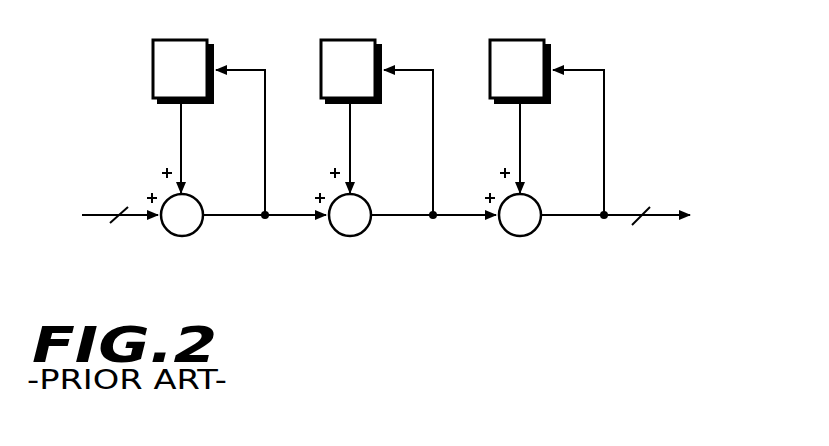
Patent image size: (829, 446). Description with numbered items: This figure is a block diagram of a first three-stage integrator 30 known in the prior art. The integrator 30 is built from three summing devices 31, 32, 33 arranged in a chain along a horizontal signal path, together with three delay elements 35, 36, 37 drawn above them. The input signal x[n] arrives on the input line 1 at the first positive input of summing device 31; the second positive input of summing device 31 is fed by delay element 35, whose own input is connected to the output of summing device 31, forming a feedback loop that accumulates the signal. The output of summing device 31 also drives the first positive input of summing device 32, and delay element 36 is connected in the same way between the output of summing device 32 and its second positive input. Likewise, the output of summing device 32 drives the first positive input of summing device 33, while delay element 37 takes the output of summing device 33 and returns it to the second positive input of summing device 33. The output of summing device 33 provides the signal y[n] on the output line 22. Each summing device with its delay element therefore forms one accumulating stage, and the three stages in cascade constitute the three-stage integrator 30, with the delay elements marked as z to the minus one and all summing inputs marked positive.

The input signal line x[n] 1 is at (95, 209).
The output signal line y[n] 22 is at (641, 209).
The first three-stage integrator 30 is at (155, 300).
The summing device 31 is at (196, 233).
The summing device 32 is at (364, 233).
The summing device 33 is at (534, 233).
The delay element 35 is at (177, 40).
The delay element 36 is at (345, 40).
The delay element 37 is at (514, 40).